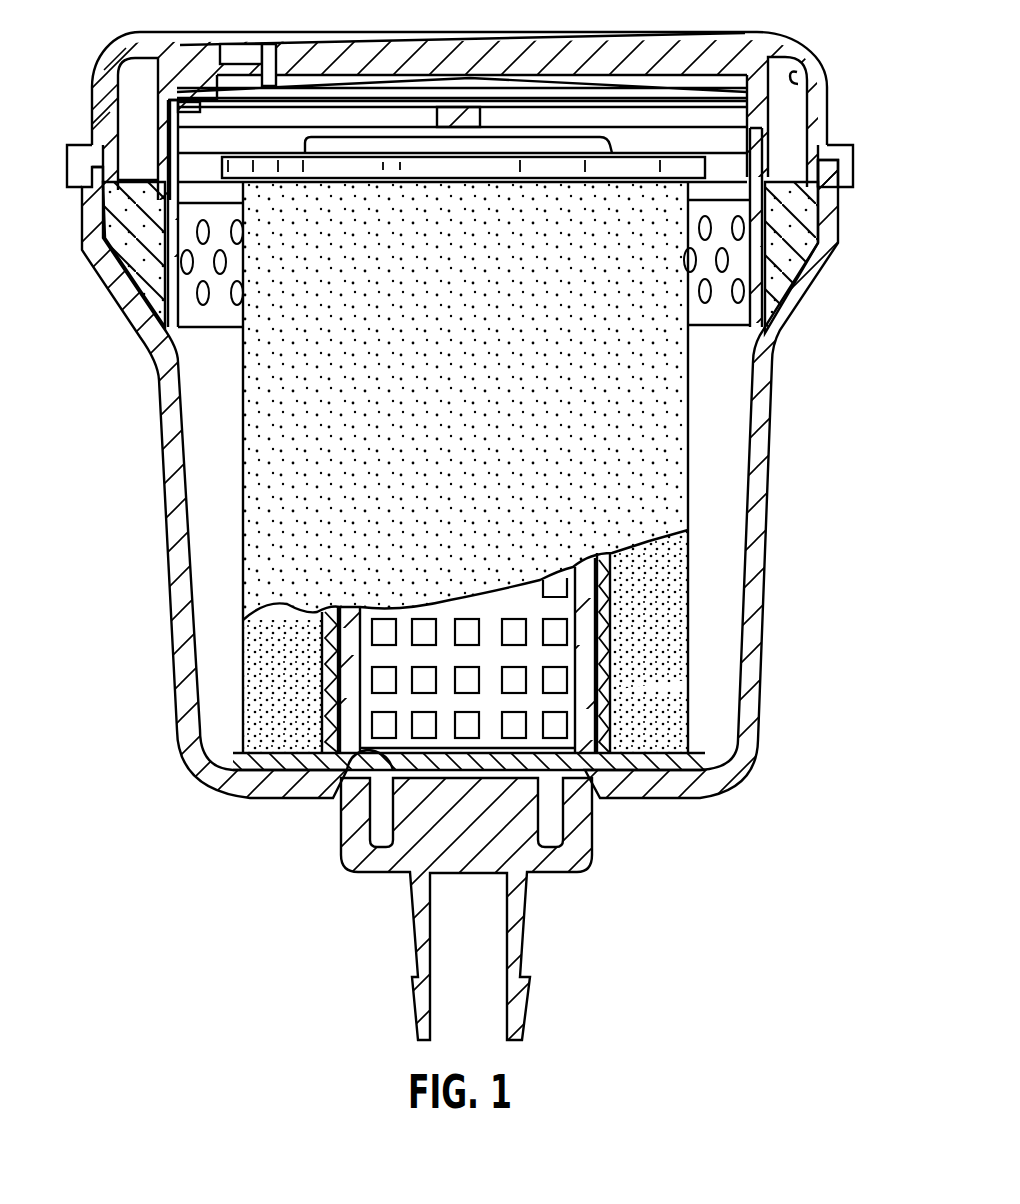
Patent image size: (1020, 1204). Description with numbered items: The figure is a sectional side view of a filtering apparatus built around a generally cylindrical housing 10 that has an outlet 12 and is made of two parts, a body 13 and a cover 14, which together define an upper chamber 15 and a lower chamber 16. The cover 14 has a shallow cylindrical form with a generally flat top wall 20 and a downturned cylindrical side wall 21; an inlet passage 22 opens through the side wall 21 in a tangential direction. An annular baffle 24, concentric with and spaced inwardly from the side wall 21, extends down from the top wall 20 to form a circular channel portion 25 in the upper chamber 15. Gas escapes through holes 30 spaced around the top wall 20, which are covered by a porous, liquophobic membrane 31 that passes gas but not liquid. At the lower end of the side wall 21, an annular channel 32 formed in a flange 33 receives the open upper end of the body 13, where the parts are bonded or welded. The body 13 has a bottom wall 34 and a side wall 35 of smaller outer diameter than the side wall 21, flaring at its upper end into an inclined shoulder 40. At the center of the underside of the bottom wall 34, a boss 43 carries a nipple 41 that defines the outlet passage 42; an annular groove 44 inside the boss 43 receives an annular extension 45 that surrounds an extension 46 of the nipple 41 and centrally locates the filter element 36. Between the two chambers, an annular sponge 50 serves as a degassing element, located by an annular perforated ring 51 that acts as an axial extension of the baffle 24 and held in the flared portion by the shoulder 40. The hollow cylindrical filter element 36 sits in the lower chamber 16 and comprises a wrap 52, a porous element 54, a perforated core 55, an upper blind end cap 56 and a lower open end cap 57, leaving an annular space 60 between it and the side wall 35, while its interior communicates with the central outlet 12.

The housing 10 is at (170, 568).
The outlet 12 is at (415, 950).
The body 13 is at (773, 353).
The cover 14 is at (830, 72).
The upper chamber 15 is at (137, 82).
The lower chamber 16 is at (193, 480).
The top wall 20 is at (197, 68).
The side wall 21 is at (98, 78).
The inlet passage 22 is at (790, 78).
The annular baffle 24 is at (745, 143).
The circular channel portion 25 is at (787, 123).
The holes 30 is at (247, 50).
The liquophobic membrane 31 is at (222, 110).
The annular channel 32 is at (100, 197).
The flange 33 is at (82, 147).
The bottom wall 34 is at (253, 800).
The side wall 35 is at (177, 687).
The filter element 36 is at (670, 455).
The inclined shoulder 40 is at (140, 330).
The nipple 41 is at (417, 1010).
The outlet passage 42 is at (497, 950).
The boss 43 is at (590, 843).
The annular groove 44 is at (370, 823).
The annular extension 45 is at (363, 870).
The extension 46 is at (413, 857).
The annular sponge 50 is at (810, 237).
The perforated ring 51 is at (762, 307).
The wrap 52 is at (673, 597).
The porous element 54 is at (613, 682).
The perforated core 55 is at (582, 572).
The upper blind end cap 56 is at (300, 166).
The lower open end cap 57 is at (667, 763).
The annular space 60 is at (733, 507).